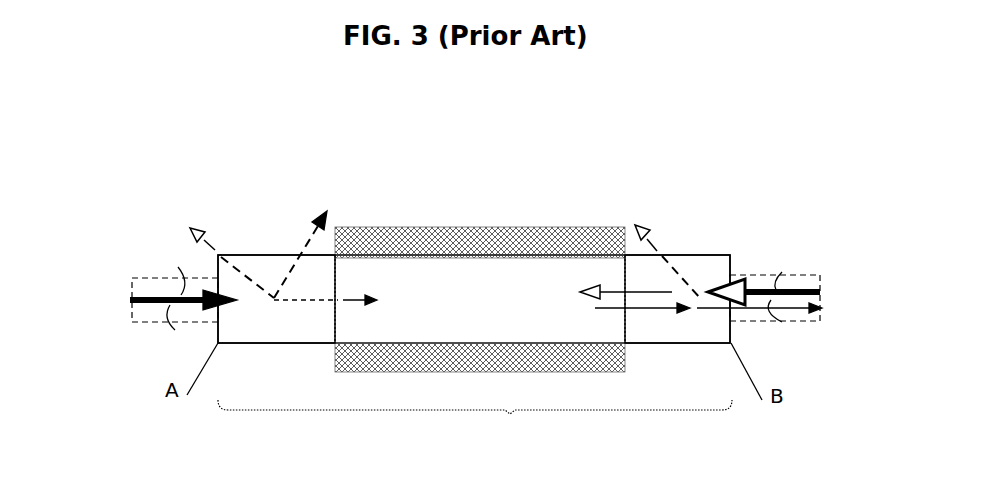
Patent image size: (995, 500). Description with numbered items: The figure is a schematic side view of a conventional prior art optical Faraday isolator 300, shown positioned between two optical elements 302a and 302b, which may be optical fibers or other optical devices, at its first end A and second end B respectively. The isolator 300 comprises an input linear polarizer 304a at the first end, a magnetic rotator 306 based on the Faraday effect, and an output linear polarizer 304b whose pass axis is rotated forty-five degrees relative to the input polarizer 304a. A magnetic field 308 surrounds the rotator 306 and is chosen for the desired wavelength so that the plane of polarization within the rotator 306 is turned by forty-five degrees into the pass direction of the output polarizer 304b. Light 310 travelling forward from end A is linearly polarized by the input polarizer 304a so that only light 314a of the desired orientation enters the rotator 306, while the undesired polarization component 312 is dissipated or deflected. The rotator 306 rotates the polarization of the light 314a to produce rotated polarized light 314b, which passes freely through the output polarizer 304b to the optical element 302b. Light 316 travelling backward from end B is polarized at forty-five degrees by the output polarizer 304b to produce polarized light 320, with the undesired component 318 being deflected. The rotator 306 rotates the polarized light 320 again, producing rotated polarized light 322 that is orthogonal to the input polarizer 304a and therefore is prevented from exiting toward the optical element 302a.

The optical Faraday isolator 300 is at (510, 413).
The optical element 302a is at (163, 320).
The optical element 302b is at (743, 323).
The input linear polarizer 304a is at (253, 257).
The output linear polarizer 304b is at (682, 257).
The magnetic rotator 306 is at (520, 277).
The magnetic field 308 is at (553, 238).
The light travelling in the forward direction 310 is at (148, 295).
The undesired polarization component 312 is at (305, 233).
The light of a desired polarization orientation 314a is at (347, 297).
The rotated polarized light 314b is at (612, 308).
The light travelling in the backward direction 316 is at (753, 287).
The undesired polarization component 318 is at (655, 248).
The polarized light 320 is at (603, 287).
The rotated polarized light 322 is at (188, 226).